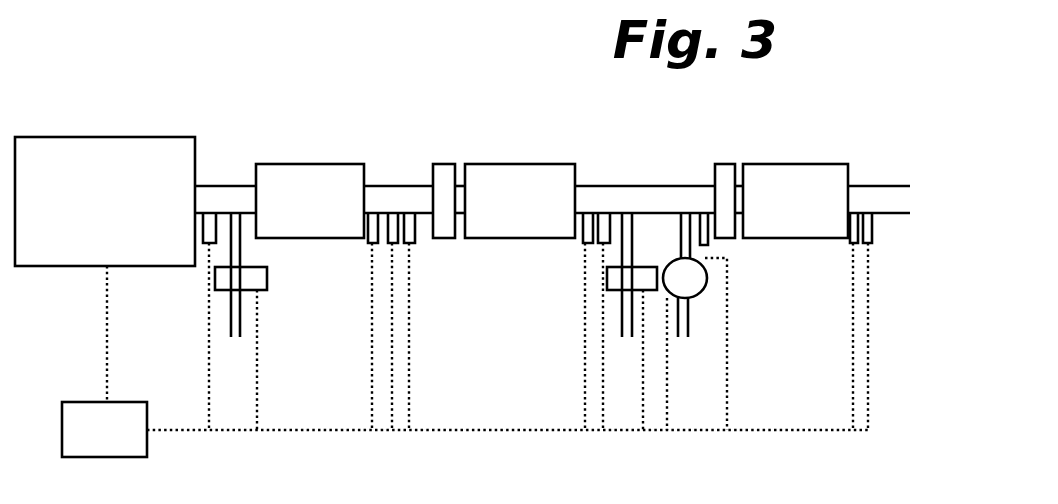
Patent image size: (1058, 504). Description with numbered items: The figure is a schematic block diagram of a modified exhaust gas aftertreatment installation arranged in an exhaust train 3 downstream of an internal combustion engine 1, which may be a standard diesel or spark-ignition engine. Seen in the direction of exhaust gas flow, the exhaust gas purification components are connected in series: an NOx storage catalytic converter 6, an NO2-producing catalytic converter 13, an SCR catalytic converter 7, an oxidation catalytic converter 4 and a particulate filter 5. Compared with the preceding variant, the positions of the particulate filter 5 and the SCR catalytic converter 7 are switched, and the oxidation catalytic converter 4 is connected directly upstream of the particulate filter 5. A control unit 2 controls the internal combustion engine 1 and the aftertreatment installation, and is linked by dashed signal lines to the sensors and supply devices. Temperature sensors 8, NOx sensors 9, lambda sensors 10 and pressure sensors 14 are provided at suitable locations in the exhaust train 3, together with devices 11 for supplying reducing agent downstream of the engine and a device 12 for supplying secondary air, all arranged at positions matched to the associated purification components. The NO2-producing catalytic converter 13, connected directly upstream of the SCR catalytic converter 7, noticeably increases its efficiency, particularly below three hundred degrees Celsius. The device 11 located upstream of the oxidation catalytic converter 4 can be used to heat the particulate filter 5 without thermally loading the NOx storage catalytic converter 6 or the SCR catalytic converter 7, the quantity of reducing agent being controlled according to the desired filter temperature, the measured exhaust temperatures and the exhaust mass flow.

The internal combustion engine 1 is at (88, 158).
The control unit 2 is at (130, 418).
The exhaust train 3 is at (217, 198).
The oxidation catalytic converter 4 is at (723, 167).
The particulate filter 5 is at (793, 188).
The NOx storage catalytic converter 6 is at (318, 217).
The SCR catalytic converter 7 is at (517, 195).
The temperature sensor 8 is at (368, 243).
The NOx sensor 9 is at (412, 243).
The lambda sensor 10 is at (205, 245).
The device for supplying reducing agent 11 is at (250, 280).
The device for supplying secondary air 12 is at (695, 297).
The NO2-producing catalytic converter 13 is at (440, 177).
The pressure sensor 14 is at (708, 243).